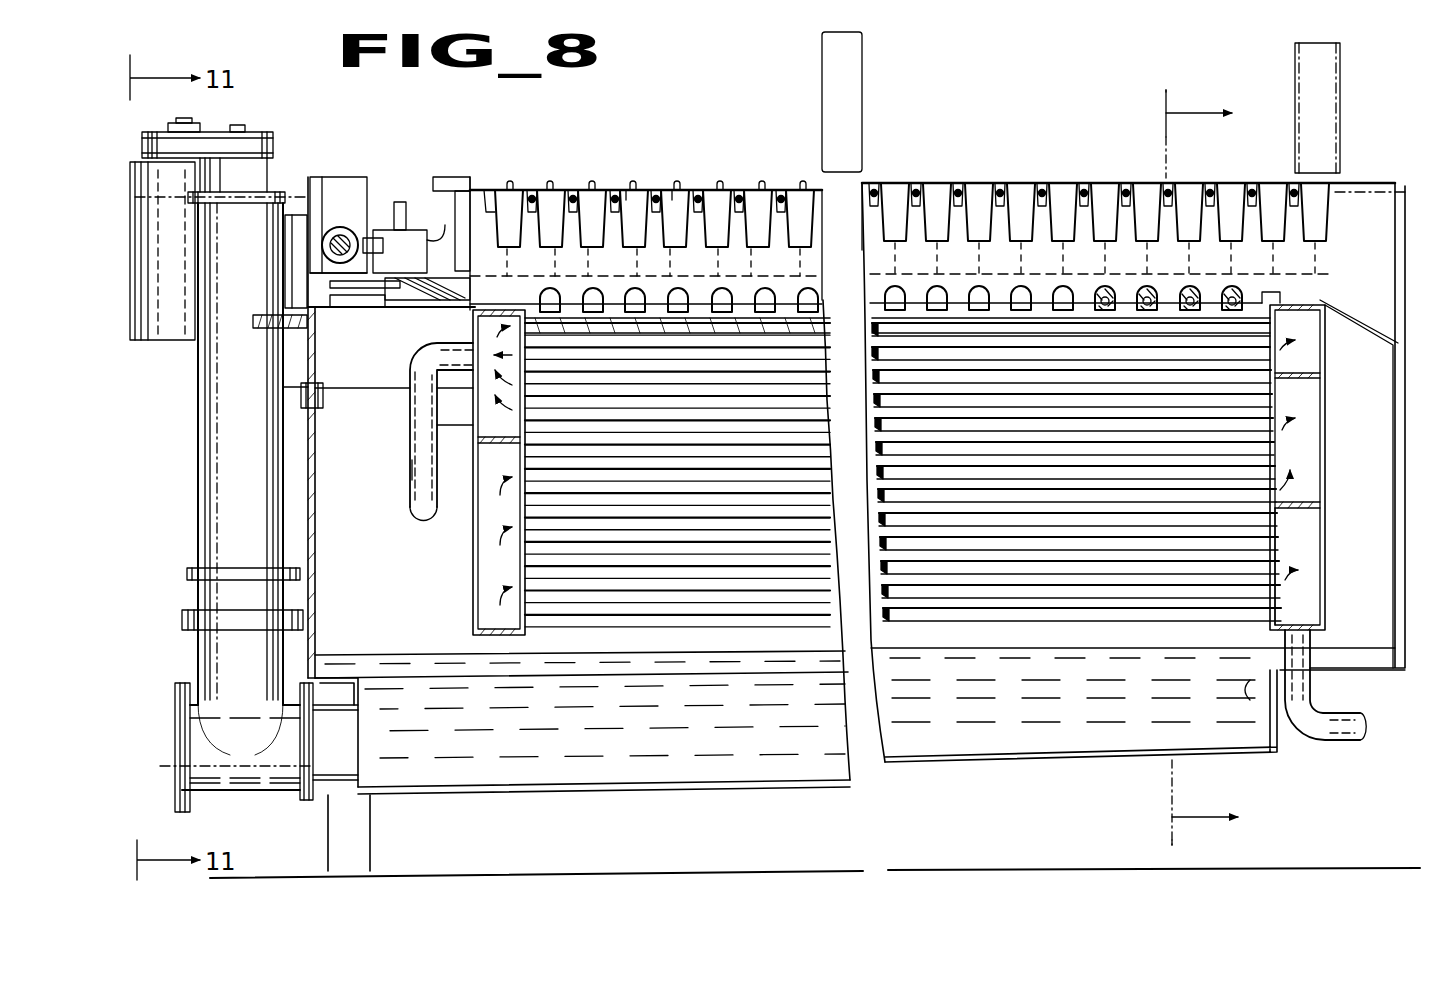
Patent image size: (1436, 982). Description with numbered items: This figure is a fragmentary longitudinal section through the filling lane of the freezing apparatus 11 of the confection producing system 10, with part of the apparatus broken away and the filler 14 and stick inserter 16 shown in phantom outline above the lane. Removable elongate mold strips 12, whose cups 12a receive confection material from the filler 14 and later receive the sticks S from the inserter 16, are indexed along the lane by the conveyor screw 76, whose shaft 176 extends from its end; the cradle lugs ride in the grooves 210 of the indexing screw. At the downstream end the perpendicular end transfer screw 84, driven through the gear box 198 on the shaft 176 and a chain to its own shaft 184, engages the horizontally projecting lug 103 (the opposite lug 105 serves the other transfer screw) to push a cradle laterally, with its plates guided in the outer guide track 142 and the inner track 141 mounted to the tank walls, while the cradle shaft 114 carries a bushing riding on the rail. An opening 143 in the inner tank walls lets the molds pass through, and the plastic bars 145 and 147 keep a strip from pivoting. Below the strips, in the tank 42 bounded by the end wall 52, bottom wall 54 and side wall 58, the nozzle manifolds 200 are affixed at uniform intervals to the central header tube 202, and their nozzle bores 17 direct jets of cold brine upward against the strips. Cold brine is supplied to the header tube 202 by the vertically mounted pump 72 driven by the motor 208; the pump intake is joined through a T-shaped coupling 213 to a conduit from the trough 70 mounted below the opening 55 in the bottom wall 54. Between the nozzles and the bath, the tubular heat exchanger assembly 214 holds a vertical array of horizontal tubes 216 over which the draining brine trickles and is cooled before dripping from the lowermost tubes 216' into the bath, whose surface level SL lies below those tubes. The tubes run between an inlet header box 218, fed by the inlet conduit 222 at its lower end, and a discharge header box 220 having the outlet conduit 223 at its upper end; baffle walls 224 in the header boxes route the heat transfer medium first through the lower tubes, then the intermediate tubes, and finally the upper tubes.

The system 10 is at (1192, 466).
The freezing apparatus 11 is at (470, 790).
The mold strip 12 is at (400, 190).
The mold cup 12a is at (815, 188).
The filler 14 is at (1295, 67).
The stick inserter 16 is at (822, 87).
The freezer nozzle 17 is at (1180, 282).
The tank 42 is at (307, 487).
The end wall 52 is at (317, 563).
The bottom wall 54 is at (338, 678).
The opening 55 is at (1260, 690).
The side wall 58 is at (1380, 262).
The trough 70 is at (845, 780).
The brine pump 72 is at (198, 400).
The conveyor screw 76 is at (395, 320).
The end transfer conveyor screw 84 is at (322, 243).
The rounded lug 103 is at (338, 235).
The rounded lug 105 is at (437, 238).
The cradle shaft 114 is at (878, 183).
The inner track 141 is at (873, 305).
The outer guide track 142 is at (330, 284).
The opening 143 is at (472, 230).
The plastic bar 145 is at (352, 180).
The bar 147 is at (460, 178).
The shaft 176 is at (368, 308).
The shaft 184 is at (330, 252).
The gear box 198 is at (290, 330).
The nozzle manifold 200 is at (722, 290).
The header tube 202 is at (1262, 300).
The motor 208 is at (175, 340).
The groove 210 is at (400, 308).
The T-shaped coupling 213 is at (262, 757).
The tubular heat exchanger assembly 214 is at (470, 582).
The heat exchanger tube 216 is at (950, 488).
The lowermost tube 216' is at (1076, 488).
The inlet header box 218 is at (1325, 432).
The discharge header box 220 is at (470, 525).
The inlet conduit 222 is at (1305, 742).
The outlet conduit 223 is at (410, 455).
The baffle wall 224 is at (1300, 510).
The stick S is at (672, 182).
The surface level SL is at (408, 655).